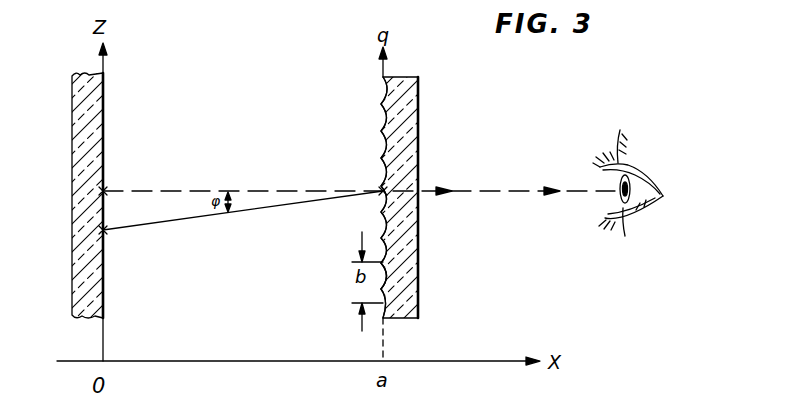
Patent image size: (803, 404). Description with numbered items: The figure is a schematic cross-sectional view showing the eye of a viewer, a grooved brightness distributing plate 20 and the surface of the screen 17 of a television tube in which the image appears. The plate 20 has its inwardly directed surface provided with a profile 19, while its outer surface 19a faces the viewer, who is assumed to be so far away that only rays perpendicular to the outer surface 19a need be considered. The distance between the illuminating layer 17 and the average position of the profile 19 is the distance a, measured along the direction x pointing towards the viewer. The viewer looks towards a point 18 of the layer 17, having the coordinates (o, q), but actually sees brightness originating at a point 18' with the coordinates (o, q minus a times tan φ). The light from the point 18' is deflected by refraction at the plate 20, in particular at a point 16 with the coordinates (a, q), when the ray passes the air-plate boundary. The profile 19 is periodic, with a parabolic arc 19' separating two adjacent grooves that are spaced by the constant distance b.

The point 16 is at (382, 193).
The surface of the screen 17 is at (103, 97).
The point 18 is at (146, 174).
The point 18' is at (241, 227).
The profile 19 is at (364, 197).
The parabolic arc 19' is at (353, 287).
The outer surface 19a is at (418, 254).
The brightness distributing plate 20 is at (418, 106).